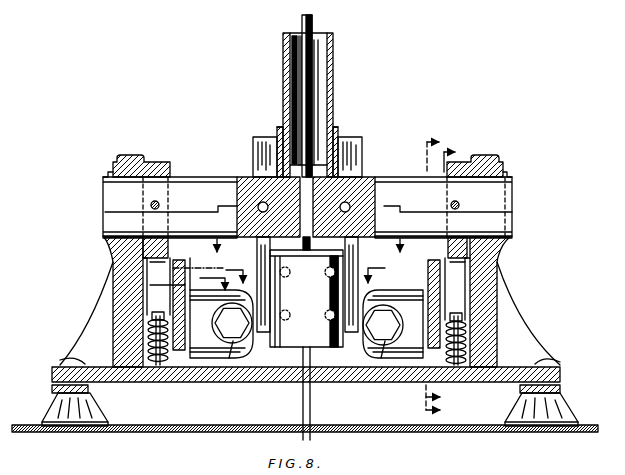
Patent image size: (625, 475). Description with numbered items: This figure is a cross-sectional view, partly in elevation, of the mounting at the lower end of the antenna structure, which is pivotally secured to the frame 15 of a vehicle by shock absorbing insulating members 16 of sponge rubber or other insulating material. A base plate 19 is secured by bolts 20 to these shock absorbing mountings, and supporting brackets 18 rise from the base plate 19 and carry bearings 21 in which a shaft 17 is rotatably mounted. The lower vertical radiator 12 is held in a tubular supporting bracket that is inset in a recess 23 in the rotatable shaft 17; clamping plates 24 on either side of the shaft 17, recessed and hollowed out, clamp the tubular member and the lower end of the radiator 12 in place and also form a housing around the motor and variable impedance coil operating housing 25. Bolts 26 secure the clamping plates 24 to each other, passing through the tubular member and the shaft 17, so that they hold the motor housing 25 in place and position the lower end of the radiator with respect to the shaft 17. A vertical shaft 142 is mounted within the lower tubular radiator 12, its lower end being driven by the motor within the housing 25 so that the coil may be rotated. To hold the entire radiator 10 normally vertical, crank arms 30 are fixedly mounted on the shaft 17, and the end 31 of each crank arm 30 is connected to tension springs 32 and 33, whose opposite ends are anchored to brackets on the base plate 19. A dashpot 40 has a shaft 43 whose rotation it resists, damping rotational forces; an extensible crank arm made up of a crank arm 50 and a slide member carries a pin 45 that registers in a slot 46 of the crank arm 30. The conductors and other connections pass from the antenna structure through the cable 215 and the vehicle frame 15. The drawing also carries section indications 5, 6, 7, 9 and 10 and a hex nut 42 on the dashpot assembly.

The vertical shaft 142 is at (312, 24).
The lower vertical radiator 12 is at (333, 45).
The clamping plates 24 is at (349, 142).
The recess 23 is at (365, 177).
The bolts 26 is at (248, 177).
The shaft 17 is at (392, 182).
The supporting brackets 18 is at (122, 155).
The bearings 21 is at (108, 172).
The section line 6 is at (439, 277).
The section line 5 is at (446, 275).
The section line 9 is at (308, 250).
The radiator 10 is at (305, 268).
The section line 7 is at (187, 288).
The crank arms 30 is at (160, 250).
The end of crank arm 31 is at (173, 310).
The tension spring 32 is at (148, 336).
The tension spring 33 is at (466, 340).
The pin 45 is at (147, 268).
The slot 46 is at (155, 303).
The crank arm 50 is at (170, 305).
The bolts 20 is at (78, 360).
The base plate 19 is at (560, 372).
The shock absorbing insulating members 16 is at (60, 393).
The frame 15 is at (575, 428).
The dashpot 40 is at (228, 358).
The hex nut 42 is at (260, 358).
The shaft 43 is at (395, 358).
The motor housing 25 is at (322, 347).
The cable 215 is at (303, 410).